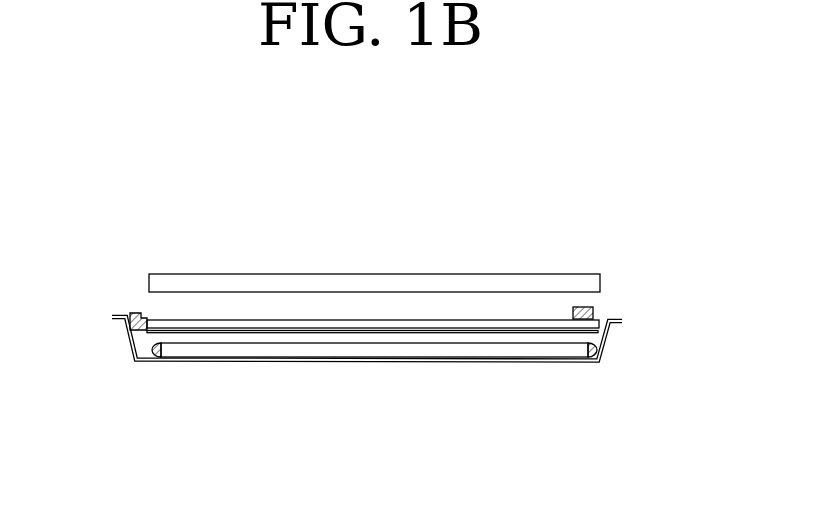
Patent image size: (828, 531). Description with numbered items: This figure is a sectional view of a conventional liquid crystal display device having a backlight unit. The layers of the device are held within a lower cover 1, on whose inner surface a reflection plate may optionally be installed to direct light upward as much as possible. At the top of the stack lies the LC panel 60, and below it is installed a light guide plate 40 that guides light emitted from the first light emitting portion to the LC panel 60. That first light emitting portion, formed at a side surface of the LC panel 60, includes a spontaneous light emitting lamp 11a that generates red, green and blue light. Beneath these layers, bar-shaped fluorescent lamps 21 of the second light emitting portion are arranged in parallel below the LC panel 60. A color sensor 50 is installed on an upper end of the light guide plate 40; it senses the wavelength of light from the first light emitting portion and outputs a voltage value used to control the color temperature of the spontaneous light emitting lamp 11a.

The lower cover 1 is at (602, 350).
The LC panel 60 is at (597, 283).
The color sensor 50 is at (593, 310).
The light guide plate 40 is at (597, 325).
The fluorescent lamps 21 is at (557, 350).
The spontaneous light emitting lamp 11a is at (133, 312).